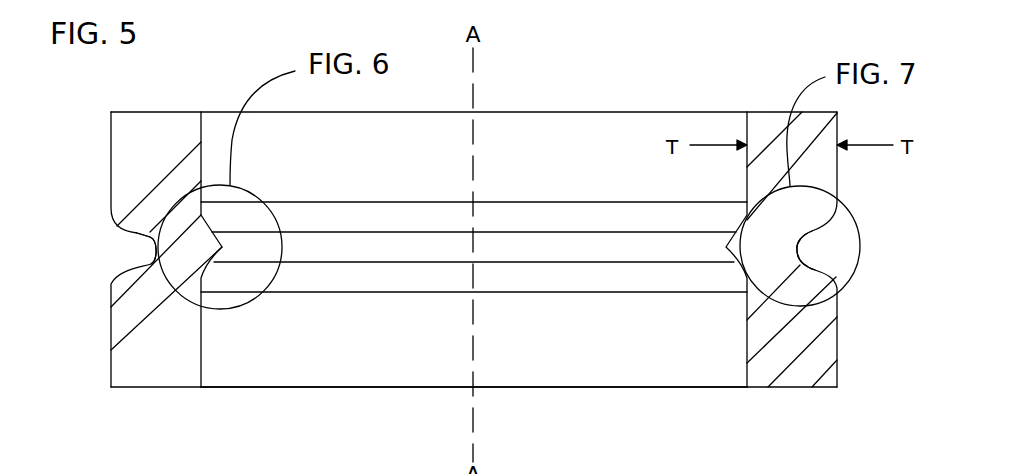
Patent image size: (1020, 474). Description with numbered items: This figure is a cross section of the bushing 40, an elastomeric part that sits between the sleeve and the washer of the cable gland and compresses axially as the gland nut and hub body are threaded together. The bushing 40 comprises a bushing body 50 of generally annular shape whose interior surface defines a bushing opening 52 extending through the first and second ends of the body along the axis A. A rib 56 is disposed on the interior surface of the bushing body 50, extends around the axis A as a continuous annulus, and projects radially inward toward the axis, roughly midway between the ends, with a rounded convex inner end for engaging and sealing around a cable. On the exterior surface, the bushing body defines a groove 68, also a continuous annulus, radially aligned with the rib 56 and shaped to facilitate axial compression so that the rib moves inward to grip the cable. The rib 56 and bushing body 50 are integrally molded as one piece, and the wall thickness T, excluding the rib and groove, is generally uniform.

The bushing 40 is at (630, 73).
The bushing body 50 is at (792, 387).
The bushing opening 52 is at (533, 334).
The rib 56 is at (223, 248).
The groove 68 is at (128, 256).